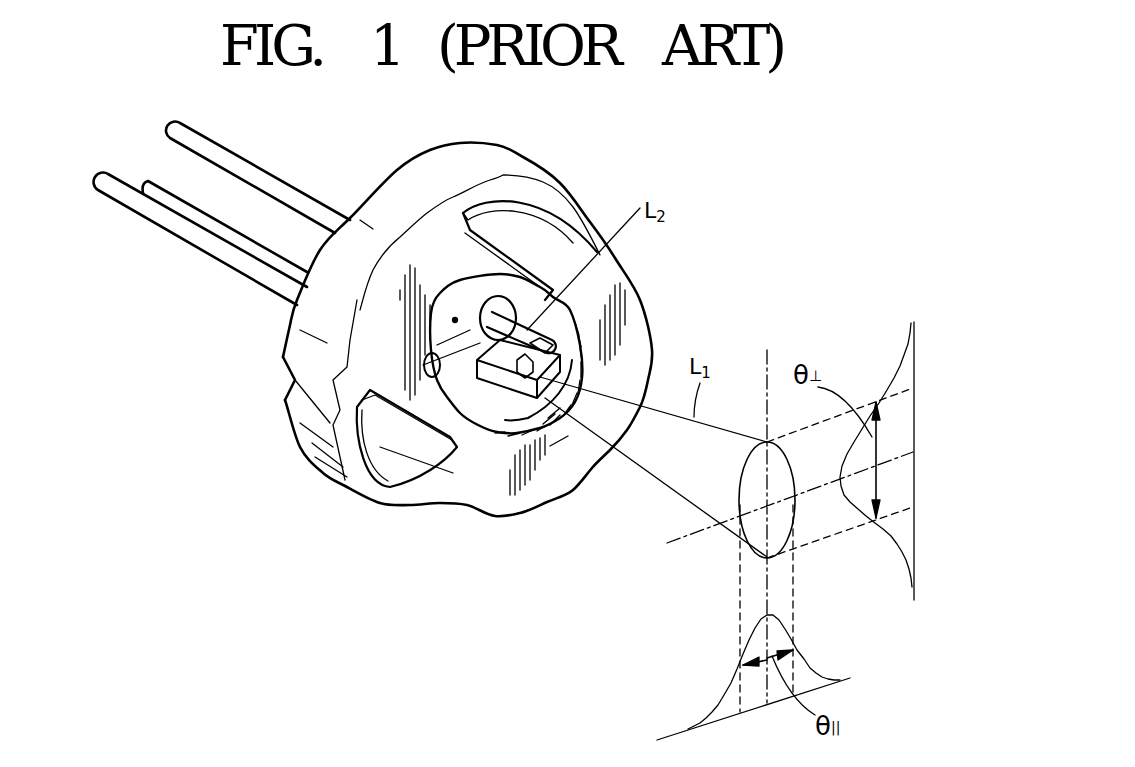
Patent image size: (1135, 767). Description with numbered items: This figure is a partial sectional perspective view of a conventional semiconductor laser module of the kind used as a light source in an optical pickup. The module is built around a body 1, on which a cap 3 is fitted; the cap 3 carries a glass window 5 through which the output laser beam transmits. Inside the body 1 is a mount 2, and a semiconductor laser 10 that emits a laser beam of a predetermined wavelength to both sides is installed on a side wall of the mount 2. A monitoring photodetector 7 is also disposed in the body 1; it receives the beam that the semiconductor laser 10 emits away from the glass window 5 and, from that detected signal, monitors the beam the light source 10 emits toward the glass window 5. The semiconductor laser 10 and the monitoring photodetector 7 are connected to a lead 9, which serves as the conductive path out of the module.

The body 1 is at (300, 445).
The mount 2 is at (510, 363).
The cap 3 is at (510, 507).
The glass window 5 is at (540, 427).
The monitoring photodetector 7 is at (470, 310).
The lead 9 is at (190, 243).
The semiconductor laser 10 is at (555, 352).